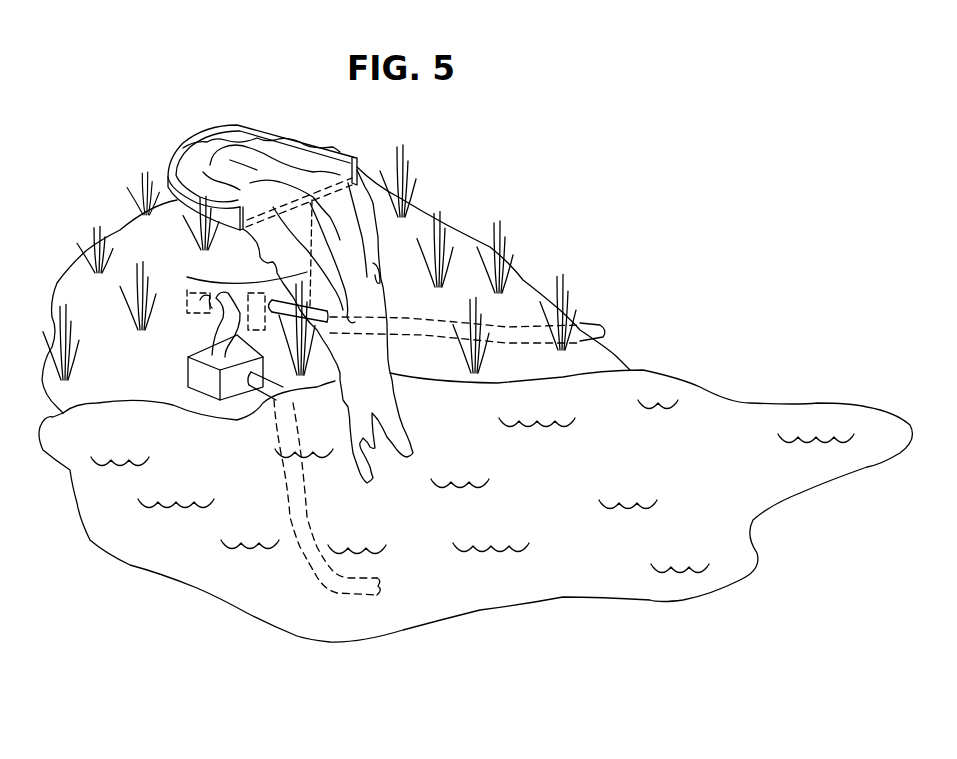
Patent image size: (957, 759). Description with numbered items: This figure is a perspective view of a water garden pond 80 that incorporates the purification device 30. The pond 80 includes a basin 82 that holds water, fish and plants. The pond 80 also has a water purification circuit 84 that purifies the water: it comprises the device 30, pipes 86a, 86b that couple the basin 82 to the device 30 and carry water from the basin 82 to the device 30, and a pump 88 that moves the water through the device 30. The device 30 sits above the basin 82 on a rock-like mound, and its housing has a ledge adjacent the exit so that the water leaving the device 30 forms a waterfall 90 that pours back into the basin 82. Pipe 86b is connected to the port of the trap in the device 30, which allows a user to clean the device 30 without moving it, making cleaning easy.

The device 30 is at (222, 112).
The water garden pond 80 is at (732, 363).
The basin 82 is at (688, 485).
The water purification circuit 84 is at (208, 334).
The pipe 86a is at (300, 507).
The pipe 86b is at (600, 327).
The pump 88 is at (205, 387).
The waterfall 90 is at (380, 243).